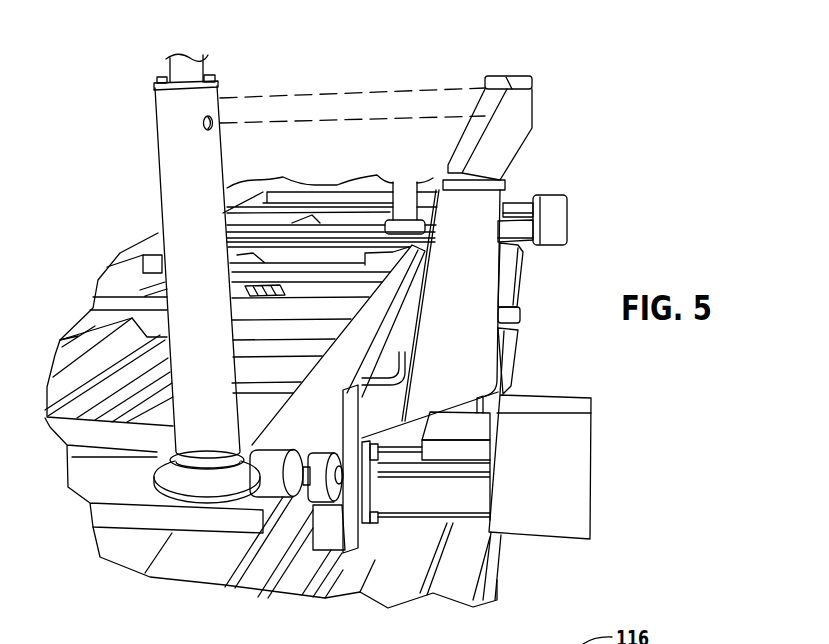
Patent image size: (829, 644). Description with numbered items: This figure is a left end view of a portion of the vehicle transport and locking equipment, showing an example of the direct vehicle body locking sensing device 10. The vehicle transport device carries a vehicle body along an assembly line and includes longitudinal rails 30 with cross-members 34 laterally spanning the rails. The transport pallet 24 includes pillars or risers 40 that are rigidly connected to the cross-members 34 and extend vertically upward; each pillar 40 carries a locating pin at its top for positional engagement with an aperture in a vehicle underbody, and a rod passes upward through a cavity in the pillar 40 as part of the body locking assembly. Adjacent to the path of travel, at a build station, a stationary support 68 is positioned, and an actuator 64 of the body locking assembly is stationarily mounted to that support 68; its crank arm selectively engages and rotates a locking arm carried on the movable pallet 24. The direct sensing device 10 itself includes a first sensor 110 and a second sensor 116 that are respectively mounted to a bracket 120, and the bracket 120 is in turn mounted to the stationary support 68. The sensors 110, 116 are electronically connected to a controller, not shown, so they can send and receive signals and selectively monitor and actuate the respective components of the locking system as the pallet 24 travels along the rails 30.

The direct sensing device 10 is at (525, 55).
The transport pallet 24 is at (197, 549).
The longitudinal rail 30 is at (329, 411).
The cross-member 34 is at (117, 491).
The pillar 40 is at (207, 298).
The actuator 64 is at (444, 504).
The support 68 is at (397, 578).
The first sensor 110 is at (533, 79).
The second sensor 116 is at (533, 116).
The bracket 120 is at (463, 340).